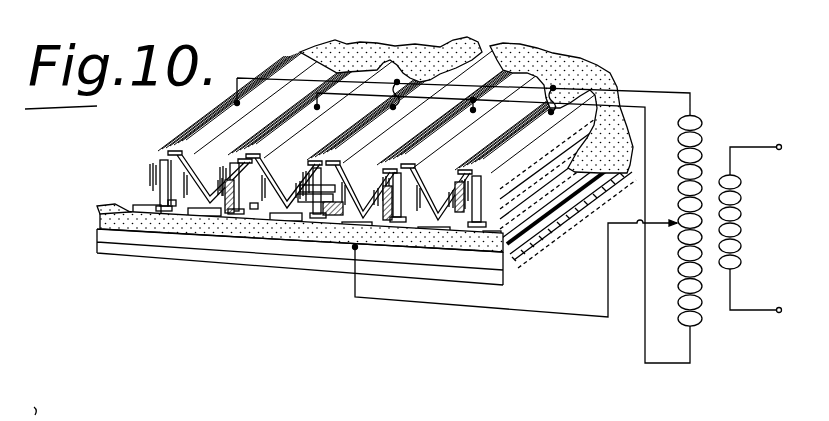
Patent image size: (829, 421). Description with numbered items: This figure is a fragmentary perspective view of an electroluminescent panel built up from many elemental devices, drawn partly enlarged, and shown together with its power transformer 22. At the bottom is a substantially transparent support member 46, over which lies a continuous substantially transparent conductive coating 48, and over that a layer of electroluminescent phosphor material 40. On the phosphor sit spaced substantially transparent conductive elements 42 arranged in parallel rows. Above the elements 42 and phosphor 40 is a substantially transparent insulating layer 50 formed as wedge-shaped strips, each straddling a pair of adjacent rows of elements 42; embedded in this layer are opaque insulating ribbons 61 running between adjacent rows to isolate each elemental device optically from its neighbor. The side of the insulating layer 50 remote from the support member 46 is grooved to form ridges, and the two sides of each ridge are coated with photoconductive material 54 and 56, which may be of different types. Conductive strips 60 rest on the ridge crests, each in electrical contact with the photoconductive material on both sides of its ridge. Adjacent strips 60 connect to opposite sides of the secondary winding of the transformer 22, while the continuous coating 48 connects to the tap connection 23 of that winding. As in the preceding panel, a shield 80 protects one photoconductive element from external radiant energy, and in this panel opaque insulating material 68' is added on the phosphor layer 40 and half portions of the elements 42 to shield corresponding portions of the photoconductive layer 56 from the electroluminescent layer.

The power transformer 22 is at (710, 164).
The tap connection 23 is at (657, 220).
The electroluminescent phosphor material 40 is at (140, 211).
The transparent conductive elements 42 is at (100, 232).
The support member 46 is at (368, 263).
The transparent conductive coating 48 is at (507, 260).
The transparent insulating layer 50 is at (158, 171).
The photoconductive material 54 is at (292, 74).
The photoconductive material 56 is at (172, 157).
The conductive strips 60 is at (353, 72).
The opaque insulating ribbons 61 is at (173, 204).
The opaque insulating material 68' is at (291, 243).
The shield 80 is at (193, 158).